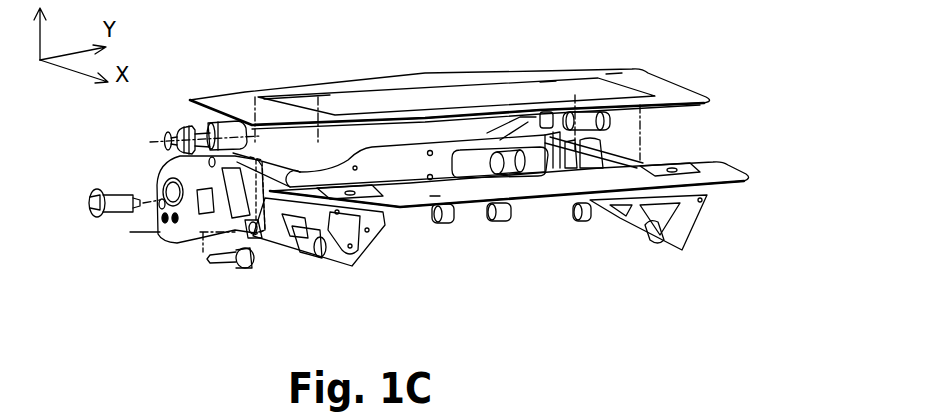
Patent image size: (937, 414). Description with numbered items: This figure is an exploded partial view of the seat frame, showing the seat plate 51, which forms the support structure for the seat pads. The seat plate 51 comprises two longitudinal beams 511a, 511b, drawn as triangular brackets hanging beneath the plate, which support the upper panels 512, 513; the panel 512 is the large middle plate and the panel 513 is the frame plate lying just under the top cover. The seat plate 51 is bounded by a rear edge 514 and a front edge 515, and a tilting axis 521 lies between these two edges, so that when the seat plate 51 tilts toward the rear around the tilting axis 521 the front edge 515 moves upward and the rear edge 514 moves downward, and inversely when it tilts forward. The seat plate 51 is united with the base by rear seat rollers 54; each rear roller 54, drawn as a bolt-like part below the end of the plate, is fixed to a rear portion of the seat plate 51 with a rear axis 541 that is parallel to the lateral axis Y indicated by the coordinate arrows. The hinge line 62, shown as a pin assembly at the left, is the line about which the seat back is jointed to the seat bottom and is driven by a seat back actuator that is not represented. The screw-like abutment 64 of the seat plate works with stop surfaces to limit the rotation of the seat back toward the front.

The seat plate 51 is at (441, 190).
The longitudinal beam 511a is at (353, 270).
The longitudinal beam 511b is at (625, 228).
The upper panel 512 is at (509, 184).
The upper panel 513 is at (476, 125).
The rear edge 514 is at (220, 88).
The front edge 515 is at (475, 208).
The tilting axis 521 is at (247, 237).
The rear axis 541 is at (160, 232).
The rear seat roller 54 is at (236, 270).
The hinge line 62 is at (157, 143).
The abutment 64 is at (113, 193).